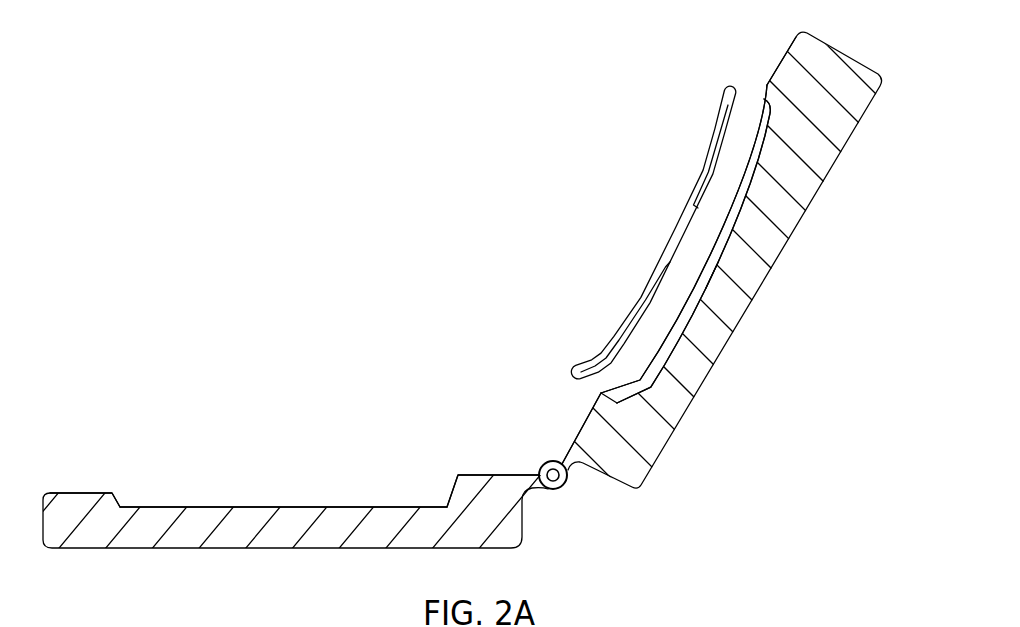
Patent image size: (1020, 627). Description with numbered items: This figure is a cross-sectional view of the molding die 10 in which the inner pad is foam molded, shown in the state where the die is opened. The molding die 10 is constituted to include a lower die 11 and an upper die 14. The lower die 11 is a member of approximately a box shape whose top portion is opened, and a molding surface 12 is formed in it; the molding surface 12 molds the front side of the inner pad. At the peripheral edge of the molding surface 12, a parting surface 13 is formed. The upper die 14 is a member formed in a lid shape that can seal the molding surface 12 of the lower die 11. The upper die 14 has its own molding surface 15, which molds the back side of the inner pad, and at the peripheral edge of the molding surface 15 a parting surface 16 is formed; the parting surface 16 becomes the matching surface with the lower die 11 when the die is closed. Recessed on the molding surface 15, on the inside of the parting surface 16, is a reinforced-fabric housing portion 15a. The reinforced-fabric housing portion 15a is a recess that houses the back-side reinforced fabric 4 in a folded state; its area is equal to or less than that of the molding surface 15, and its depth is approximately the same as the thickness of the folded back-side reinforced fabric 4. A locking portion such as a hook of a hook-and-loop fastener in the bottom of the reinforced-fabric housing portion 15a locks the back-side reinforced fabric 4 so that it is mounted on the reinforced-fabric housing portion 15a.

The molding die 10 is at (214, 200).
The lower die 11 is at (514, 517).
The molding surface 12 is at (259, 506).
The parting surface 13 is at (75, 492).
The upper die 14 is at (658, 452).
The molding surface 15 is at (755, 125).
The reinforced-fabric housing portion 15a is at (730, 266).
The parting surface 16 is at (777, 62).
The back-side reinforced fabric 4 is at (673, 238).